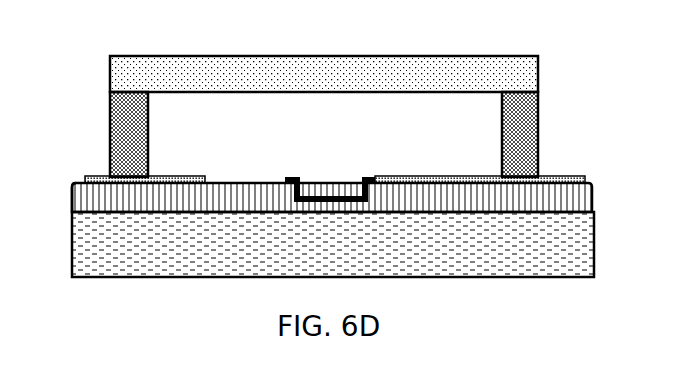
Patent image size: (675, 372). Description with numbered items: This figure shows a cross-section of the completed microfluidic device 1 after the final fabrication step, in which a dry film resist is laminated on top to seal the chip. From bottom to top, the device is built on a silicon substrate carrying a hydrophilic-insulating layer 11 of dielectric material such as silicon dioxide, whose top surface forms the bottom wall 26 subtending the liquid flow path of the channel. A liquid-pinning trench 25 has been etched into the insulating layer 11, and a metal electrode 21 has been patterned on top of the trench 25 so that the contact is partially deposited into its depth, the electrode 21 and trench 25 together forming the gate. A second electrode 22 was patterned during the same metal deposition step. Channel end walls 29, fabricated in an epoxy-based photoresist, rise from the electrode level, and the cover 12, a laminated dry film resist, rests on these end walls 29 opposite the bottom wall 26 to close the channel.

The microfluidic device 1 is at (587, 286).
The hydrophilic-insulating layer 11 is at (71, 201).
The cover 12 is at (431, 56).
The electrode 21 is at (402, 177).
The second electrode 22 is at (178, 176).
The liquid-pinning trench 25 is at (330, 188).
The bottom wall 26 is at (248, 183).
The channel end walls 29 is at (150, 128).